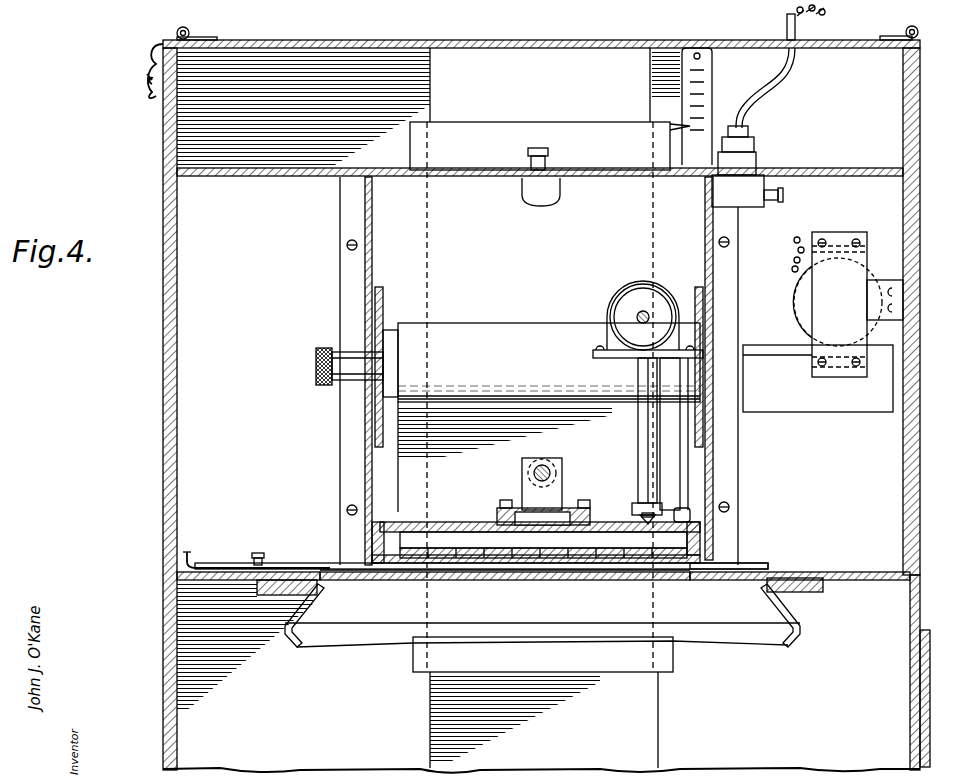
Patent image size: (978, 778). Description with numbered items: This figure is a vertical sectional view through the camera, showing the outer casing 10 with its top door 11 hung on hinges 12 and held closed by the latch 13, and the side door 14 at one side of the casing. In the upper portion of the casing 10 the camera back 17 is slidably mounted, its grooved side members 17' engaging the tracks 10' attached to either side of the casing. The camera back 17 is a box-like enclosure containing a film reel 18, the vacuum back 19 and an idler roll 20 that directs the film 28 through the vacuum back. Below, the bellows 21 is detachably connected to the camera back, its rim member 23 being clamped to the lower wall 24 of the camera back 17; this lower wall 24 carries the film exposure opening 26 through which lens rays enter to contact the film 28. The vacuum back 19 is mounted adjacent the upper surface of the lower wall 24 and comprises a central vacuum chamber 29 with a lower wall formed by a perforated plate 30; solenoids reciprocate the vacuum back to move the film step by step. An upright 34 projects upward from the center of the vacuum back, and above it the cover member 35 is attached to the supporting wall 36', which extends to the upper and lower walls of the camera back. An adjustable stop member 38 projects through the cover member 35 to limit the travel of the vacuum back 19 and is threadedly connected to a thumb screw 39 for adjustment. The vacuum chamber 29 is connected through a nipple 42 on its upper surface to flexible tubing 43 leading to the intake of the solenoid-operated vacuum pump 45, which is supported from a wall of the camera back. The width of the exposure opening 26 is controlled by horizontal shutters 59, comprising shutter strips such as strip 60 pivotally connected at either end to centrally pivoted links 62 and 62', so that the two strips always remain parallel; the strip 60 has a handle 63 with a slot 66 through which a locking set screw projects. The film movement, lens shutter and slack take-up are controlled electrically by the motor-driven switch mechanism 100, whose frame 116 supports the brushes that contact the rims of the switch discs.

The outer casing 10 is at (537, 406).
The tracks 10' is at (540, 390).
The top door 11 is at (830, 46).
The hinges 12 is at (912, 27).
The latch 13 is at (152, 60).
The side door 14 is at (930, 688).
The camera back 17 is at (158, 346).
The grooved side members 17' is at (567, 381).
The film reel 18 is at (392, 328).
The vacuum back 19 is at (376, 535).
The idler roll 20 is at (672, 515).
The bellows 21 is at (795, 638).
The rim member 23 is at (272, 598).
The lower wall 24 is at (190, 586).
The film exposure opening 26 is at (508, 572).
The film 28 is at (400, 458).
The vacuum chamber 29 is at (446, 546).
The perforated plate 30 is at (600, 572).
The upright 34 is at (546, 512).
The cover member 35 is at (733, 508).
The supporting wall 36' is at (538, 371).
The adjustable stop member 38 is at (550, 459).
The thumb screw 39 is at (533, 473).
The nipple 42 is at (648, 526).
The flexible tubing 43 is at (640, 426).
The vacuum pump 45 is at (637, 284).
The horizontal shutters 59 is at (776, 562).
The shutter strip 60 is at (301, 568).
The link 62 is at (761, 613).
The link 62' is at (318, 615).
The handle 63 is at (184, 560).
The slot 66 is at (257, 553).
The motor-driven switch mechanism 100 is at (786, 309).
The frame 116 is at (846, 226).